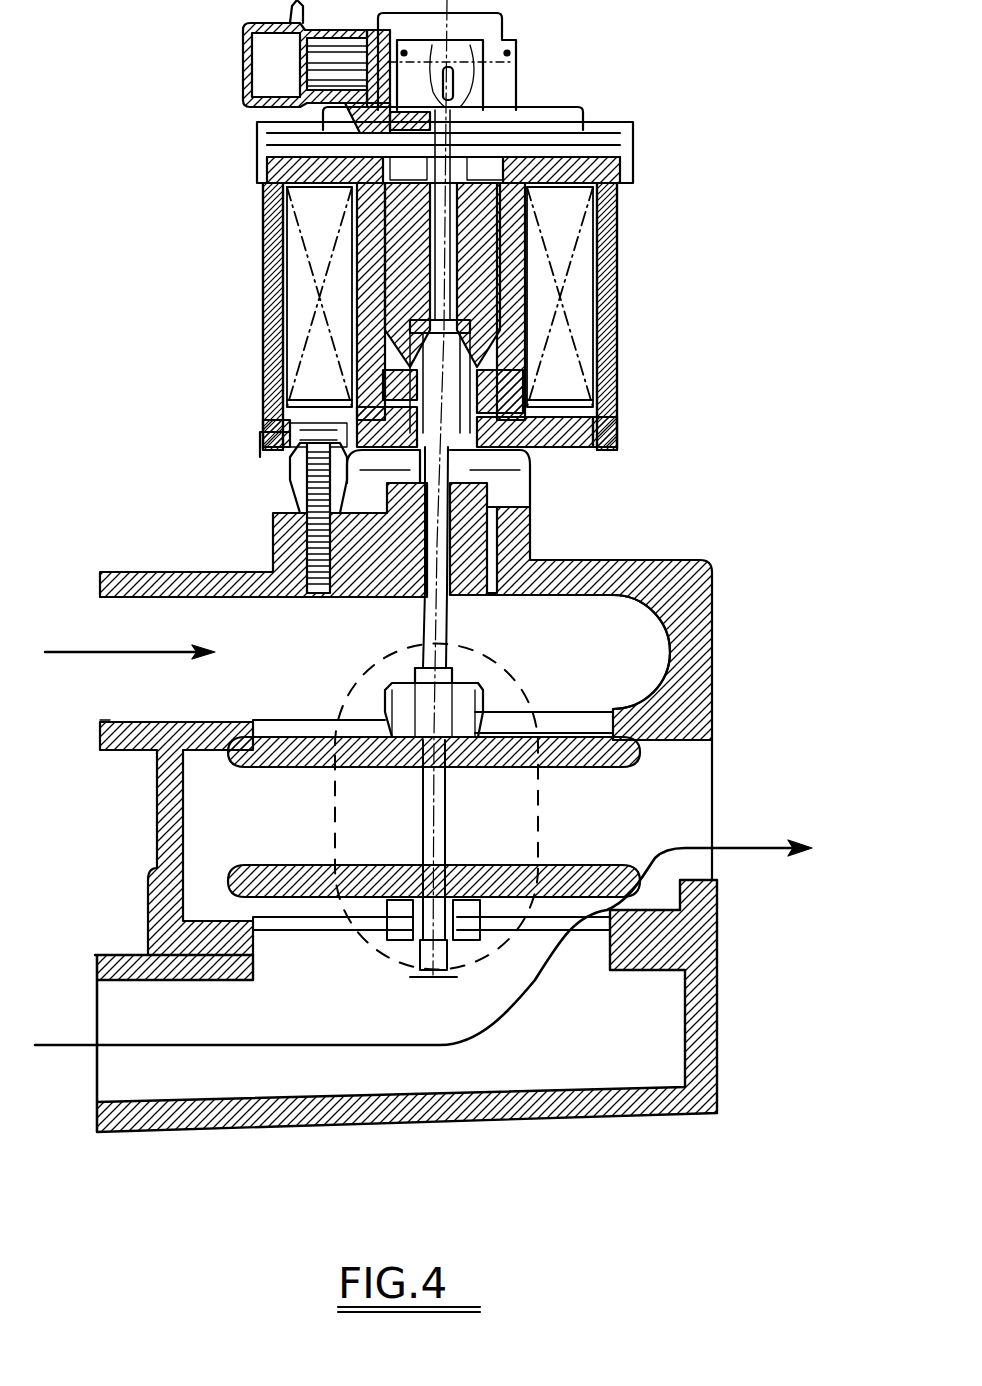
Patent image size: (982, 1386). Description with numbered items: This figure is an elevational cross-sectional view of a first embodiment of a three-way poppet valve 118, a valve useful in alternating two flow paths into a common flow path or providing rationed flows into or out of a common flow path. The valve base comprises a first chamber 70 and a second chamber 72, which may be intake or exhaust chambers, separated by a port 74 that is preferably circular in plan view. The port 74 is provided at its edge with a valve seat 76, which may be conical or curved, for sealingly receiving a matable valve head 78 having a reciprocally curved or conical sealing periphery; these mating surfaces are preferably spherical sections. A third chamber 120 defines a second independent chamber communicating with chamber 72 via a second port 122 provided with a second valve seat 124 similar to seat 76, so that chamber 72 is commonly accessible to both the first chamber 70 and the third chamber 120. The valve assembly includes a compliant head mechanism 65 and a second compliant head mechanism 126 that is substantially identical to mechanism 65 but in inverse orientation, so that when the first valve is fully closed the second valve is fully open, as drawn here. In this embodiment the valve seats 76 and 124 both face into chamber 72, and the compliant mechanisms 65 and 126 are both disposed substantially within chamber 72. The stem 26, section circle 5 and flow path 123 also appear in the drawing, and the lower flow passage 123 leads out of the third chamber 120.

The three-way poppet valve 118 is at (808, 528).
The first chamber 70 is at (258, 641).
The valve stem 26 is at (420, 620).
The compliant head mechanism 65 is at (490, 707).
The port 74 is at (297, 725).
The valve seat 76 is at (610, 734).
The valve head 78 is at (603, 760).
The detail section circle 5 is at (532, 812).
The outlet flow path 123 is at (597, 912).
The second chamber 72 is at (292, 833).
The second port 122 is at (327, 950).
The second valve seat 124 is at (276, 948).
The second compliant head mechanism 126 is at (505, 905).
The third chamber 120 is at (622, 1049).